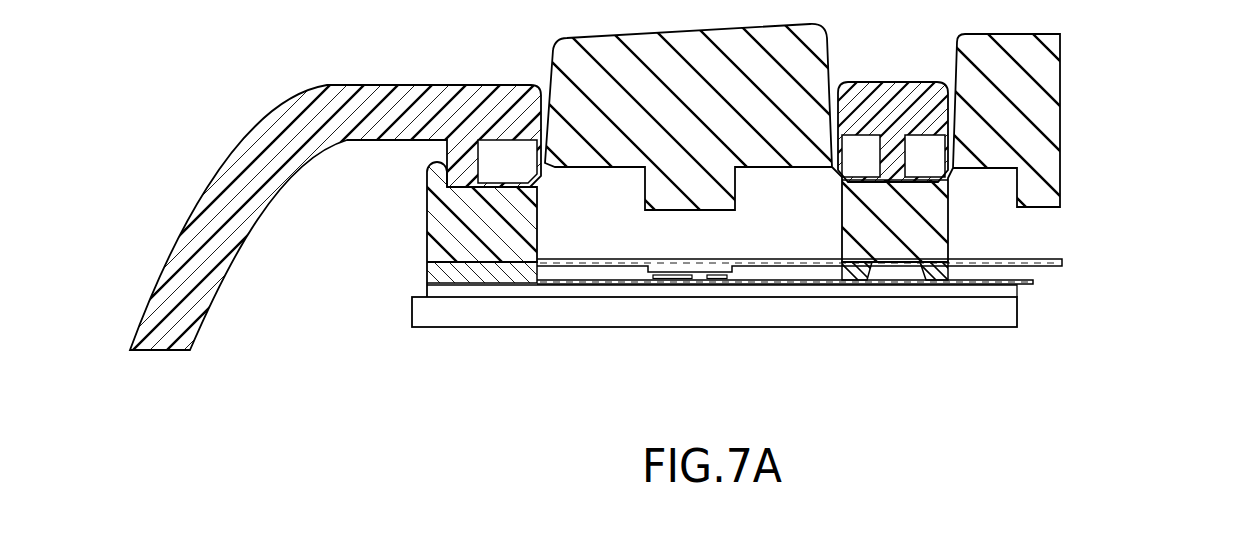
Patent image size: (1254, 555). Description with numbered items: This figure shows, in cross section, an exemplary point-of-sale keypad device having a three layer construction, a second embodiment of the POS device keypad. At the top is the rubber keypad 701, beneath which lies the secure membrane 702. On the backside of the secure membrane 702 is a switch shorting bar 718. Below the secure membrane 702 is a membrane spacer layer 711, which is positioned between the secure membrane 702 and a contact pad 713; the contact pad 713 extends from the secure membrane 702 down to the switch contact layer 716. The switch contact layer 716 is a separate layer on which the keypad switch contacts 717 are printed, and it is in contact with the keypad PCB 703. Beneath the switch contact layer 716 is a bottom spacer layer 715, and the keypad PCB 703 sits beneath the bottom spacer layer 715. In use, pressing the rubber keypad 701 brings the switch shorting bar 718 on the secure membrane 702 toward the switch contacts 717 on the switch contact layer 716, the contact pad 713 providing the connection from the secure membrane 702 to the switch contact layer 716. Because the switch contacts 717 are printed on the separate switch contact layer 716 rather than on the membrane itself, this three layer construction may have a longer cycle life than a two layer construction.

The rubber keypad 701 is at (1067, 103).
The secure membrane 702 is at (1042, 259).
The keypad PCB 703 is at (597, 327).
The membrane spacer layer 711 is at (938, 284).
The contact pad 713 is at (900, 284).
The bottom spacer layer 715 is at (497, 297).
The switch contact layer 716 is at (1030, 285).
The switch contacts 717 is at (677, 284).
The switch shorting bar 718 is at (737, 284).